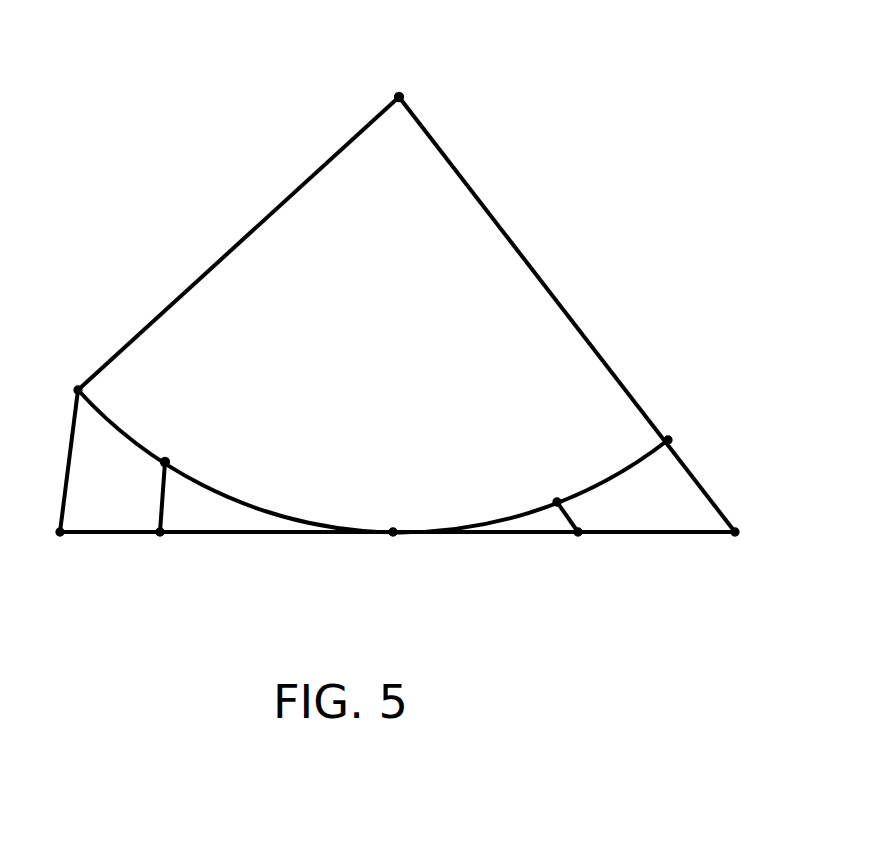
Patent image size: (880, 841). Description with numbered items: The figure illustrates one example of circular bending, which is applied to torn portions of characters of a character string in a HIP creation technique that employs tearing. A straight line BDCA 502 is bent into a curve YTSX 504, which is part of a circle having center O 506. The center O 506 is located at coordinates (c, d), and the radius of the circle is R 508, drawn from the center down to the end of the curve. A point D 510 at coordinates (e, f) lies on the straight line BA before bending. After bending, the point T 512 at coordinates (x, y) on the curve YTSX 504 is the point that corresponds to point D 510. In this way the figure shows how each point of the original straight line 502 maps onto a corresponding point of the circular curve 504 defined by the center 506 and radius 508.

The straight line BDCA 502 is at (512, 535).
The curve YTSX 504 is at (232, 497).
The center O 506 is at (400, 94).
The radius R 508 is at (304, 183).
The point D 510 is at (155, 534).
The point T 512 is at (160, 466).